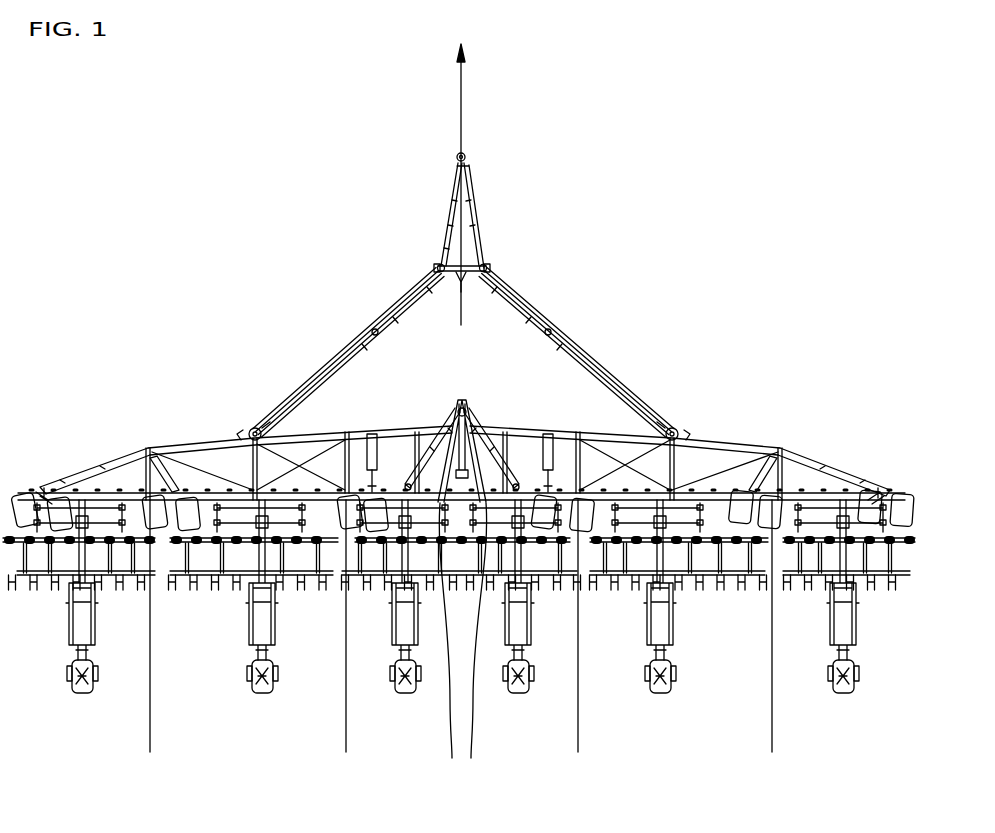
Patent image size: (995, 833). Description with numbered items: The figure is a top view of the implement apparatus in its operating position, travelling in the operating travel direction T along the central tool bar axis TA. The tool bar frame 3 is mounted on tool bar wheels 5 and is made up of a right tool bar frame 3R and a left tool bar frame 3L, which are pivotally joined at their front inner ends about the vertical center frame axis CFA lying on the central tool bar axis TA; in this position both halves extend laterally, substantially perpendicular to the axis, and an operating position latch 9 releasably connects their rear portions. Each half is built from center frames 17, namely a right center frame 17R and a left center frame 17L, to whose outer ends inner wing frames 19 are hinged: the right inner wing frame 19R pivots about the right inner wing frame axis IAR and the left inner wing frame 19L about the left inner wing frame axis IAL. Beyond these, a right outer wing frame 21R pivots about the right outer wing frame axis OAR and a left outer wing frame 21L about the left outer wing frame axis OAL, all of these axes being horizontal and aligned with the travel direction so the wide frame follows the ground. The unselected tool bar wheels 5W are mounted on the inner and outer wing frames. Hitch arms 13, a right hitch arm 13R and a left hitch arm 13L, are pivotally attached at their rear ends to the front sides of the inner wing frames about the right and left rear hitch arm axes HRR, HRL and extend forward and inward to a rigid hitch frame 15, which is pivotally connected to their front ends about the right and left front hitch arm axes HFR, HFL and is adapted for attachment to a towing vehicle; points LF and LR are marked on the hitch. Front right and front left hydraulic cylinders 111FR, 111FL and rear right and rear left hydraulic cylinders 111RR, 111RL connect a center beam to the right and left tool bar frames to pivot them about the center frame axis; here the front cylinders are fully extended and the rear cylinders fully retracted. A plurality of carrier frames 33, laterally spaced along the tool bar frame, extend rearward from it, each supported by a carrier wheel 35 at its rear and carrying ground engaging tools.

The operating travel direction T is at (461, 38).
The central tool bar axis TA is at (463, 103).
The rigid hitch frame 15 is at (474, 213).
The front lift point LF is at (463, 268).
The rear lift point LR is at (464, 276).
The left front hitch arm axis HFL is at (439, 268).
The right front hitch arm axis HFR is at (486, 268).
The hitch arms 13 is at (463, 353).
The left hitch arm 13L is at (366, 333).
The right hitch arm 13R is at (540, 321).
The left rear hitch arm axis HRL is at (250, 428).
The right rear hitch arm axis HRR is at (677, 428).
The tool bar frame 3 is at (461, 451).
The left tool bar frame 3L is at (181, 446).
The right tool bar frame 3R is at (718, 448).
The center frame axis CFA is at (469, 405).
The front left hydraulic cylinder 111FL is at (429, 440).
The front right hydraulic cylinder 111FR is at (496, 440).
The rear left hydraulic cylinder 111RL is at (426, 642).
The rear right hydraulic cylinder 111RR is at (501, 642).
The tool bar wheels 5 is at (22, 492).
The unselected tool bar wheels 5W is at (900, 490).
The operating position latch 9 is at (461, 596).
The center frames 17 is at (563, 646).
The left center frame 17L is at (433, 503).
The right center frame 17R is at (491, 503).
The inner wing frames 19 is at (611, 646).
The left inner wing frame 19L is at (254, 620).
The right inner wing frame 19R is at (600, 566).
The left outer wing frame 21L is at (138, 548).
The right outer wing frame 21R is at (792, 548).
The carrier frames 33 is at (207, 577).
The carrier wheel 35 is at (271, 696).
The left outer wing frame axis OAL is at (150, 745).
The left inner wing frame axis IAL is at (346, 745).
The right inner wing frame axis IAR is at (578, 745).
The right outer wing frame axis OAR is at (772, 745).